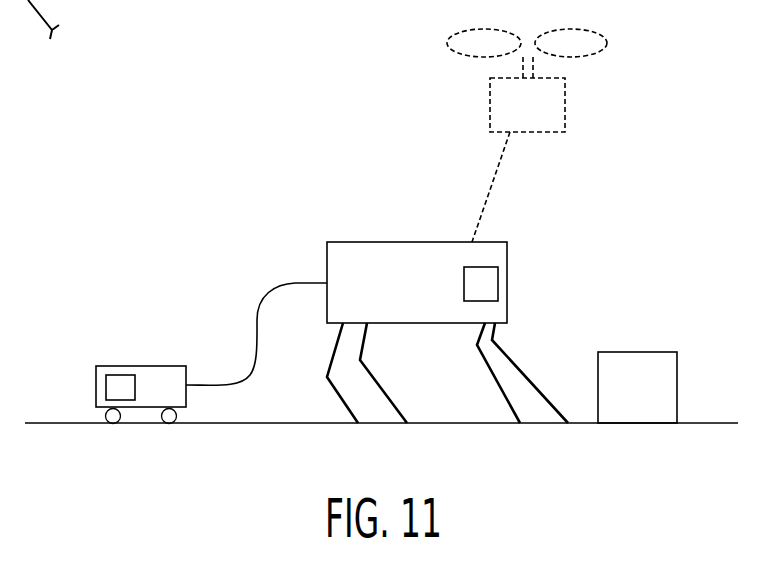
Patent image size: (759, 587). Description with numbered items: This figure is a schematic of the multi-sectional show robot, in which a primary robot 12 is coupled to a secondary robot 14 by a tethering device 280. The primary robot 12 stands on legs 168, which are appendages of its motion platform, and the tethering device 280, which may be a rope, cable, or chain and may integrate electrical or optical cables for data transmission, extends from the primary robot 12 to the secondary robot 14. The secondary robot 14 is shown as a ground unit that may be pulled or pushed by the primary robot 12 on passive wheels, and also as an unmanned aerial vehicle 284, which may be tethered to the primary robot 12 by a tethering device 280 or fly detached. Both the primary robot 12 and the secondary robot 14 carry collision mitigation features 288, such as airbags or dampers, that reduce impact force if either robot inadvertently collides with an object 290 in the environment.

The primary robot 12 is at (360, 242).
The secondary robot 14 is at (143, 366).
The leg 168 is at (369, 372).
The tethering device 280 is at (260, 302).
The unmanned aerial vehicle 284 is at (566, 97).
The collision mitigation features 288 is at (495, 283).
The object 290 is at (658, 399).